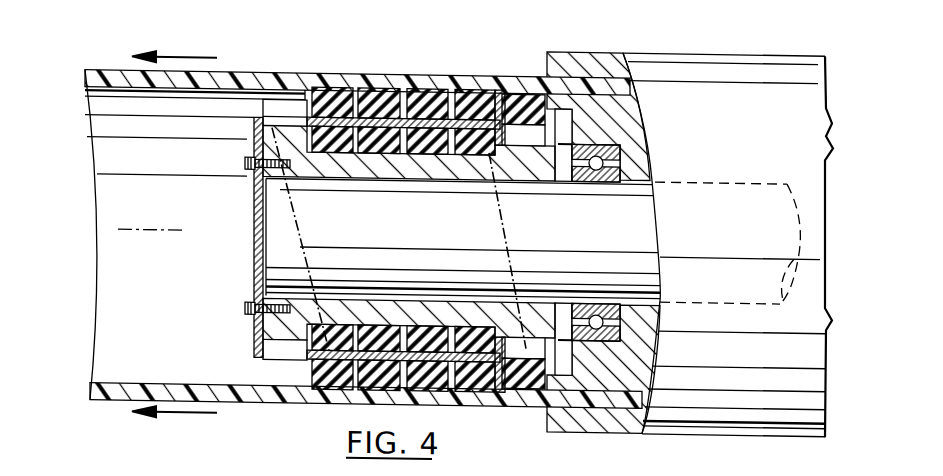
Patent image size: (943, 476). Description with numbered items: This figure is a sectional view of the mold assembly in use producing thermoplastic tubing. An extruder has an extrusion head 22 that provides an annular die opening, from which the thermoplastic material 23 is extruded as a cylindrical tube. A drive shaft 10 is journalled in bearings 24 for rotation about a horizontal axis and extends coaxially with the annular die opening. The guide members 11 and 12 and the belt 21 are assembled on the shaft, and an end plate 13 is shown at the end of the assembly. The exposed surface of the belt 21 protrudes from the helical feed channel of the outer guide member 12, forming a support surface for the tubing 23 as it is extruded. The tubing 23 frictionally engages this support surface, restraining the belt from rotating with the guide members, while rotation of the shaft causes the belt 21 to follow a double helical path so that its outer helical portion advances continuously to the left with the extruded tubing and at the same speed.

The drive shaft 10 is at (625, 215).
The guide member 11 is at (433, 178).
The outer guide member 12 is at (305, 360).
The end plate 13 is at (254, 233).
The belt 21 is at (373, 90).
The extrusion head 22 is at (592, 58).
The thermoplastic tubing 23 is at (268, 77).
The bearings 24 is at (583, 178).